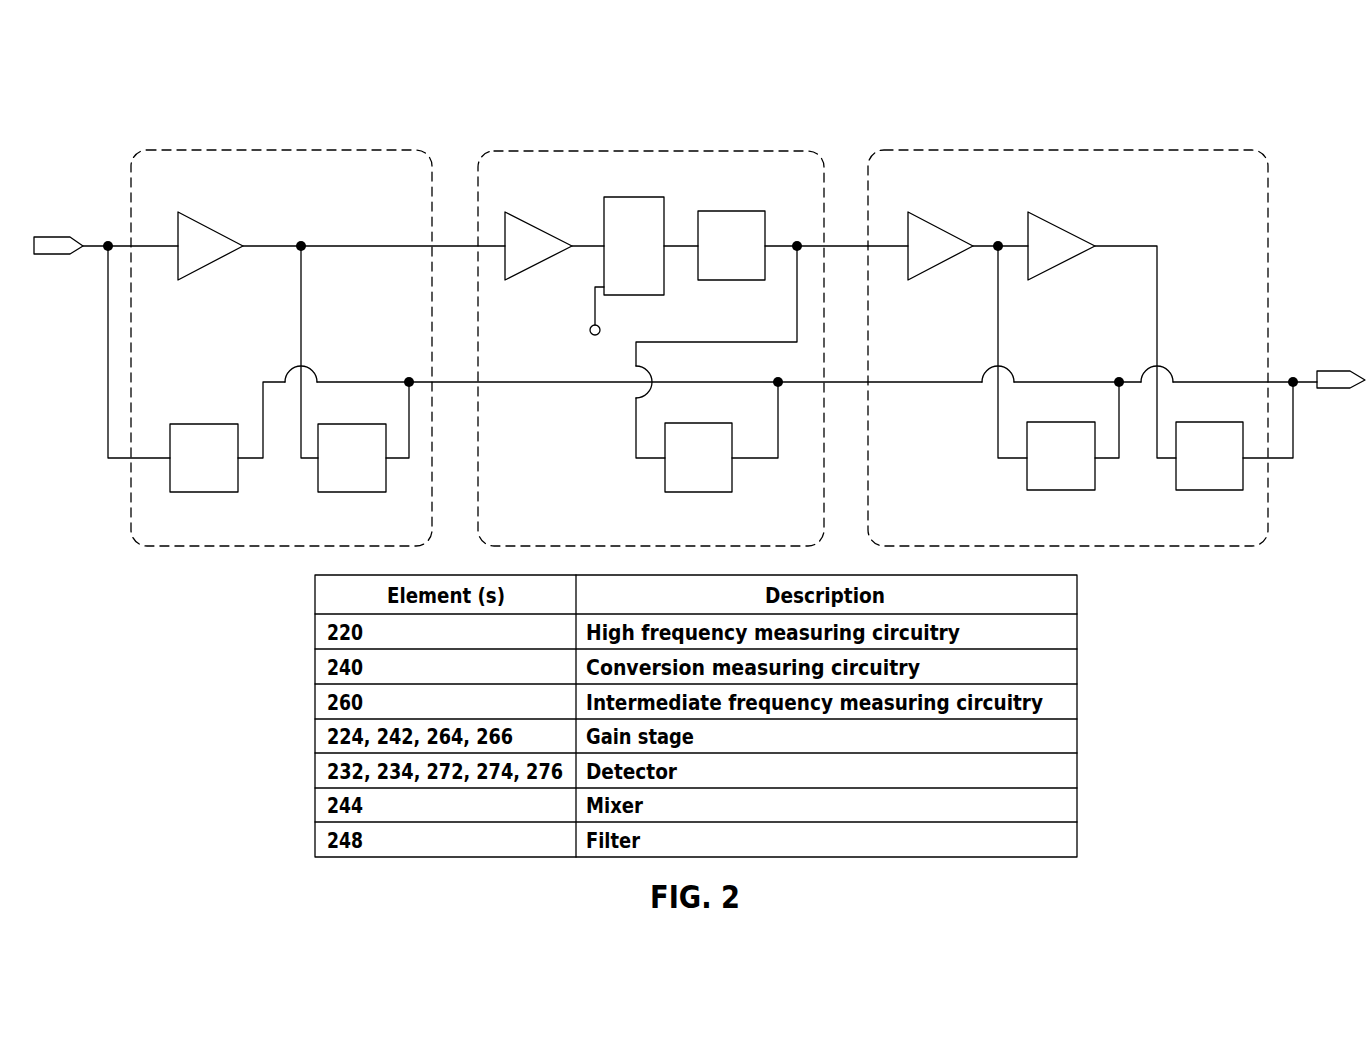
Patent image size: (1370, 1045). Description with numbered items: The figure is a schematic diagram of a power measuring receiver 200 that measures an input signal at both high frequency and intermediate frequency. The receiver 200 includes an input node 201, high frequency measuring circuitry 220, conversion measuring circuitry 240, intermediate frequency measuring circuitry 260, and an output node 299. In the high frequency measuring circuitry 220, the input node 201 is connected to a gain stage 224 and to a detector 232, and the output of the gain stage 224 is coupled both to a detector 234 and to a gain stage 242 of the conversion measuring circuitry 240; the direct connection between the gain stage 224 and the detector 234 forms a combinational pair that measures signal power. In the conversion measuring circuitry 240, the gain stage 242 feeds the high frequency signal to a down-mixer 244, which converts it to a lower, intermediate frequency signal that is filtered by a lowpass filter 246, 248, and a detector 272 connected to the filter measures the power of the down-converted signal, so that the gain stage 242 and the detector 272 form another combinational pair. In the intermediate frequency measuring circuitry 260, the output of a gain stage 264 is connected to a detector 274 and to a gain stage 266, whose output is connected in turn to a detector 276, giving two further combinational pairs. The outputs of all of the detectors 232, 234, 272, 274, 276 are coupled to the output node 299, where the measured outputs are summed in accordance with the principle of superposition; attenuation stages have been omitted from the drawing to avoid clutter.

The power measuring receiver 200 is at (686, 79).
The input node 201 is at (44, 234).
The high frequency measuring circuitry 220 is at (283, 150).
The gain stage 224 is at (211, 233).
The detector 232 is at (204, 492).
The detector 234 is at (353, 492).
The conversion measuring circuitry 240 is at (643, 151).
The gain stage 242 is at (513, 228).
The down-mixer 244 is at (634, 197).
The lowpass filter 246 is at (589, 334).
The low-pass filter 248 is at (732, 211).
The intermediate frequency measuring circuitry 260 is at (1057, 150).
The gain stage 264 is at (919, 215).
The gain stage 266 is at (1039, 215).
The detector 272 is at (698, 492).
The detector 274 is at (1062, 490).
The detector 276 is at (1212, 490).
The output node 299 is at (1342, 371).